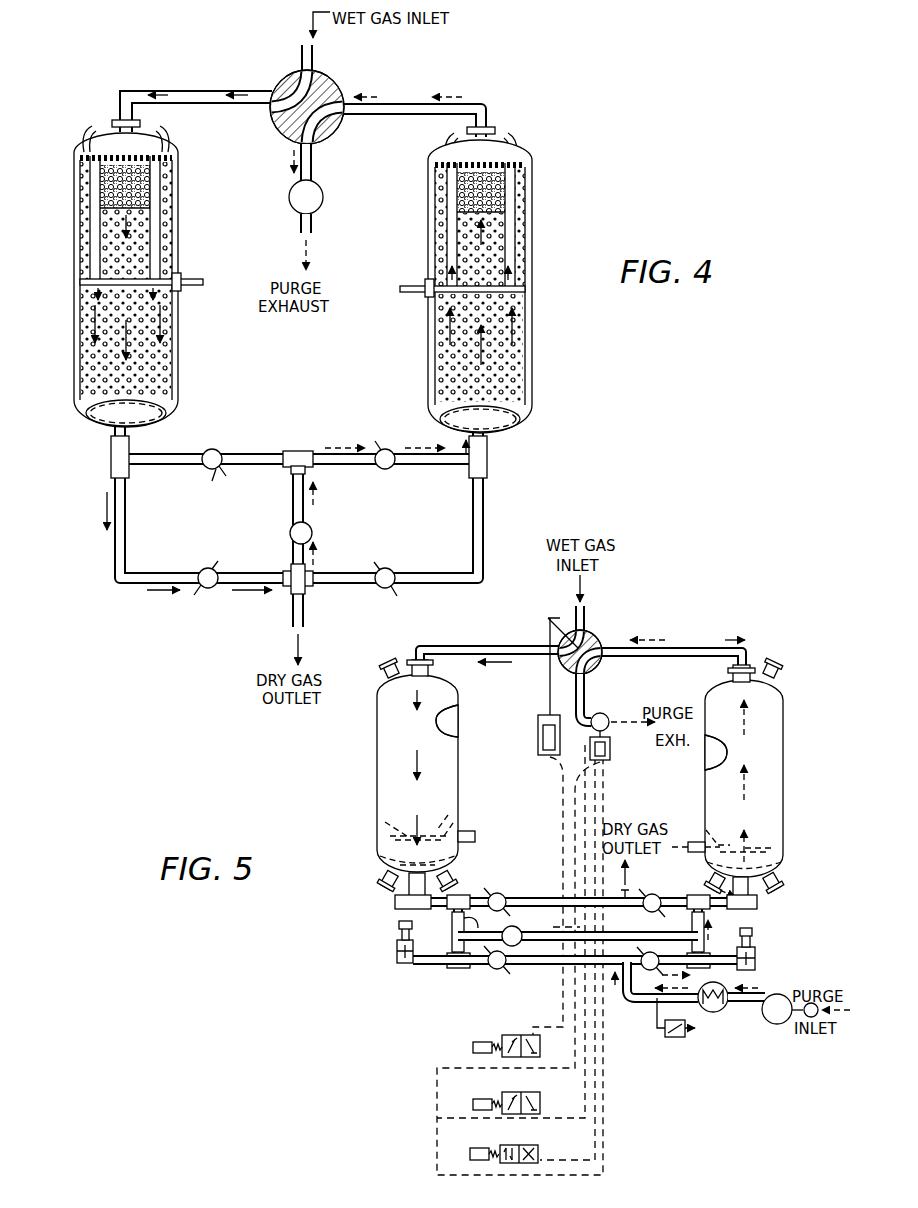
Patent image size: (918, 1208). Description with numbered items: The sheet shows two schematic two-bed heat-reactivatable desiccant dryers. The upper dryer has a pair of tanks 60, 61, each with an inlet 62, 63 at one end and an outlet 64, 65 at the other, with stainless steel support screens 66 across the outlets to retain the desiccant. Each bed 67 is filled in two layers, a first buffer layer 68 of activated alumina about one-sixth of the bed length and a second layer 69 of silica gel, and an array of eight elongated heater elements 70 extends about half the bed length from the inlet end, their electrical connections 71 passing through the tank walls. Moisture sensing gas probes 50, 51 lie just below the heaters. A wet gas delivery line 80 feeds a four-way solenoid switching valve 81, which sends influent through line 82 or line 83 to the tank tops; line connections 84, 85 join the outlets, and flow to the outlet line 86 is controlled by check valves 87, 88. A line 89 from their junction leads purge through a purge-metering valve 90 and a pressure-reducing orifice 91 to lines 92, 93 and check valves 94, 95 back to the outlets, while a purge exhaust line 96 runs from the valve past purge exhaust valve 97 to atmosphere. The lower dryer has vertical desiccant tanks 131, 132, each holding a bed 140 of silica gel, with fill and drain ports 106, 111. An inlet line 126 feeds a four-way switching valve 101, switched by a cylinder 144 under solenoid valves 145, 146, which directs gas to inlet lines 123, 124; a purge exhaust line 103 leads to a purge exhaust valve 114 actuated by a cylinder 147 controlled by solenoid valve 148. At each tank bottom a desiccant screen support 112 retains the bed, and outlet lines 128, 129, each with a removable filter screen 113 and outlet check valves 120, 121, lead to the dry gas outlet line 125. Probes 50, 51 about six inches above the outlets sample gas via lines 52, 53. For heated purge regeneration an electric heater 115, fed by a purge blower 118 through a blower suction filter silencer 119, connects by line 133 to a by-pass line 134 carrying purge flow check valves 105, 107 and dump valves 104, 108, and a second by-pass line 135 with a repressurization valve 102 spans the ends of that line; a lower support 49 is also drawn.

In FIG. 4, the lower desiccant support screen 49 is at (82, 286).
In FIG. 5, the lower desiccant support screen 49 is at (385, 822).
In FIG. 4, the moisture sensing gas probe 50 is at (178, 279).
In FIG. 5, the moisture sensing gas probe 50 is at (458, 822).
In FIG. 4, the moisture sensing gas probe 51 is at (428, 285).
In FIG. 5, the moisture sensing gas probe 51 is at (706, 830).
In FIG. 5, the line 52 is at (474, 838).
In FIG. 5, the line 53 is at (700, 842).
In FIG. 4, the tank 60 is at (135, 280).
In FIG. 4, the tank 61 is at (522, 270).
In FIG. 4, the inlet 62 is at (117, 122).
In FIG. 4, the inlet 63 is at (496, 130).
In FIG. 4, the outlet 64 is at (112, 440).
In FIG. 4, the outlet 65 is at (489, 455).
In FIG. 4, the support screen 66 is at (85, 421).
In FIG. 4, the bed 67 is at (176, 210).
In FIG. 4, the first buffer layer 68 is at (80, 186).
In FIG. 4, the second layer 69 is at (82, 264).
In FIG. 4, the heater elements 70 is at (165, 172).
In FIG. 4, the electrical connections 71 is at (82, 135).
In FIG. 4, the wet gas delivery line 80 is at (316, 47).
In FIG. 4, the four-way solenoid switching valve 81 is at (334, 93).
In FIG. 4, the line 82 is at (204, 96).
In FIG. 4, the line 83 is at (398, 104).
In FIG. 4, the line connection 84 is at (112, 541).
In FIG. 4, the line connection 85 is at (505, 548).
In FIG. 4, the outlet line 86 is at (292, 612).
In FIG. 4, the check valve 87 is at (200, 591).
In FIG. 4, the check valve 88 is at (390, 591).
In FIG. 4, the line 89 is at (292, 549).
In FIG. 4, the purge-metering valve 90 is at (313, 531).
In FIG. 4, the pressure-reducing orifice 91 is at (293, 511).
In FIG. 4, the line 92 is at (227, 453).
In FIG. 4, the line 93 is at (386, 471).
In FIG. 4, the check valve 94 is at (205, 480).
In FIG. 4, the check valve 95 is at (391, 450).
In FIG. 4, the purge exhaust line 96 is at (316, 160).
In FIG. 4, the purge exhaust valve 97 is at (318, 212).
In FIG. 5, the four-way switching valve 101 is at (602, 668).
In FIG. 5, the repressurization valve 102 is at (525, 930).
In FIG. 5, the purge exhaust line 103 is at (584, 698).
In FIG. 5, the dump valve 104 is at (399, 963).
In FIG. 5, the purge flow check valve 105 is at (492, 969).
In FIG. 5, the desiccant fill port 106 is at (391, 664).
In FIG. 5, the purge flow check valve 107 is at (642, 961).
In FIG. 5, the dump valve 108 is at (757, 966).
In FIG. 5, the desiccant drain port 111 is at (385, 886).
In FIG. 5, the desiccant screen support 112 is at (380, 856).
In FIG. 5, the filter screen 113 is at (395, 907).
In FIG. 5, the purge exhaust valve 114 is at (609, 716).
In FIG. 5, the electric heater 115 is at (712, 1013).
In FIG. 5, the purge blower 118 is at (771, 1024).
In FIG. 5, the blower suction filter silencer 119 is at (805, 1018).
In FIG. 5, the outlet check valve 120 is at (506, 899).
In FIG. 5, the outlet check valve 121 is at (655, 911).
In FIG. 5, the inlet line 123 is at (478, 646).
In FIG. 5, the inlet line 124 is at (694, 648).
In FIG. 5, the dry gas outlet line 125 is at (630, 882).
In FIG. 5, the inlet line 126 is at (588, 623).
In FIG. 5, the outlet line 128 is at (472, 896).
In FIG. 5, the outlet line 129 is at (672, 902).
In FIG. 5, the desiccant tank 131 is at (416, 780).
In FIG. 5, the desiccant tank 132 is at (704, 757).
In FIG. 5, the line 133 is at (636, 1003).
In FIG. 5, the by-pass line 134 is at (546, 967).
In FIG. 5, the second by-pass line 135 is at (455, 926).
In FIG. 5, the bed 140 is at (490, 731).
In FIG. 5, the cylinder 144 is at (545, 758).
In FIG. 5, the solenoid valve 145 is at (508, 1035).
In FIG. 5, the solenoid valve 146 is at (508, 1092).
In FIG. 5, the cylinder 147 is at (609, 760).
In FIG. 5, the solenoid valve 148 is at (503, 1146).